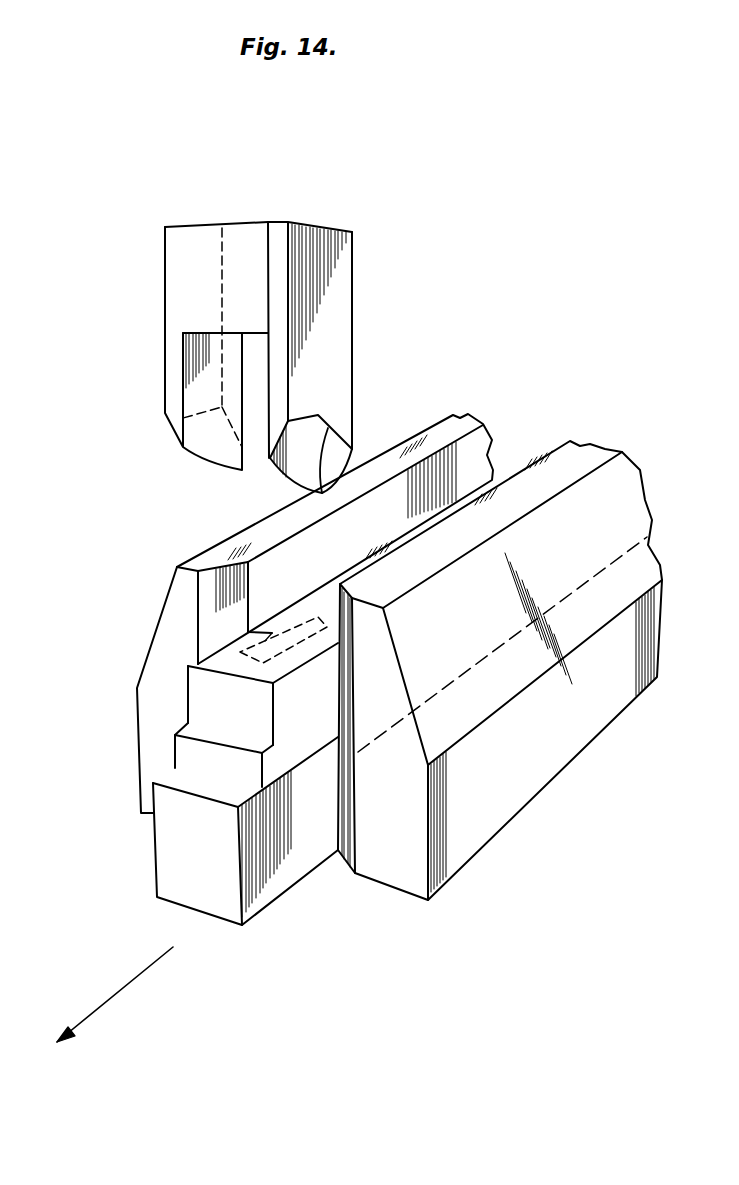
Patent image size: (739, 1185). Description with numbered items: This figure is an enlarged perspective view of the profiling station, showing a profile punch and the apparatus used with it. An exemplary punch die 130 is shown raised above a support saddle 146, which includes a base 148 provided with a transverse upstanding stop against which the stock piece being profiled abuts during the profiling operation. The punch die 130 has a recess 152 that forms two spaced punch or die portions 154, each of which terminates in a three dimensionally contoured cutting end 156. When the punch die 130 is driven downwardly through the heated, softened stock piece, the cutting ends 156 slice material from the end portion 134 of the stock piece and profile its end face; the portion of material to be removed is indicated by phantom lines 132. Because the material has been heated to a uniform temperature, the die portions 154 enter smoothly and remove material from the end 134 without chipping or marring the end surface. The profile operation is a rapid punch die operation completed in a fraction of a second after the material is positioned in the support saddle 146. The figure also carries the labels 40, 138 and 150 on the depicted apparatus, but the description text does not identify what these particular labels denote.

The clamp assembly 40 is at (474, 328).
The punch die 130 is at (358, 218).
The phantom lines 132 is at (270, 633).
The end portion 134 is at (478, 462).
The jaw face 138 is at (273, 582).
The support saddle 146 is at (540, 747).
The base 148 is at (292, 867).
The step 150 is at (192, 750).
The recess 152 is at (212, 341).
The punch or die portions 154 is at (323, 308).
The cutting end 156 is at (330, 458).